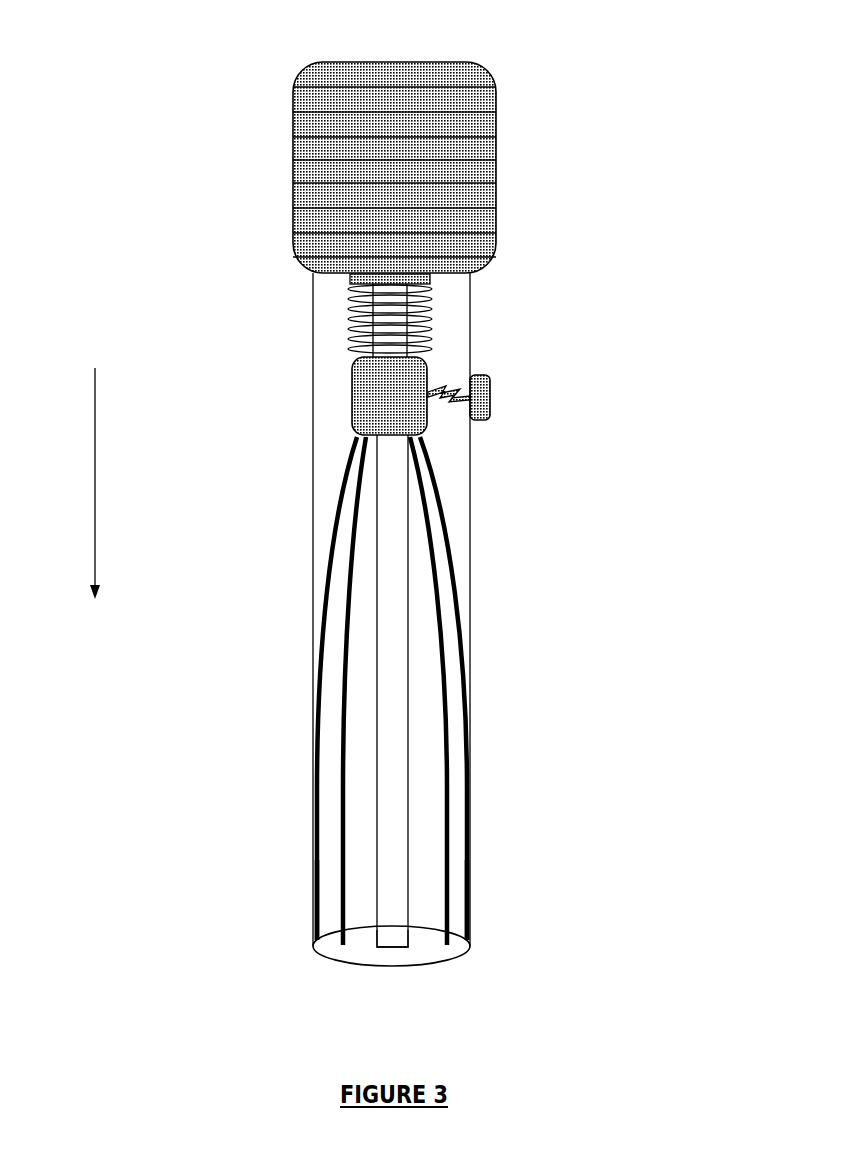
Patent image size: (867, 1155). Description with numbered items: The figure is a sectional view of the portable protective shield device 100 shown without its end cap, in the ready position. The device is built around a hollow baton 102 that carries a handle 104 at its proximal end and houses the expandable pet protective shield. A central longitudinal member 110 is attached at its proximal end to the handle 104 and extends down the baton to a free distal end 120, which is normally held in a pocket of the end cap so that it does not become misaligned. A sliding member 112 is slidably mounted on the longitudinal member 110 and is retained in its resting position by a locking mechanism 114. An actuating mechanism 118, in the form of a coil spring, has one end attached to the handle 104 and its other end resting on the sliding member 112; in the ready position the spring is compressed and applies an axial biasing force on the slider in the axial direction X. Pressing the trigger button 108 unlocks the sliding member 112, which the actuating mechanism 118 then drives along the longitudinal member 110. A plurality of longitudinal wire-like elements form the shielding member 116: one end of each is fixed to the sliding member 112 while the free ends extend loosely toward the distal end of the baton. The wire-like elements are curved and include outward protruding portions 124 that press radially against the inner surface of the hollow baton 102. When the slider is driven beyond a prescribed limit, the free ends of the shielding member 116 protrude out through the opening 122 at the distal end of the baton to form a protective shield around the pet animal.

The portable protective shield device 100 is at (193, 98).
The hollow baton 102 is at (313, 343).
The handle 104 is at (495, 120).
The trigger button 108 is at (492, 397).
The central longitudinal member 110 is at (377, 620).
The sliding member 112 is at (352, 408).
The locking mechanism 114 is at (428, 396).
The shielding member 116 is at (333, 523).
The actuating mechanism 118 is at (433, 325).
The distal end of the longitudinal member 120 is at (393, 948).
The opening 122 is at (336, 961).
The outward protruding portions 124 is at (313, 880).